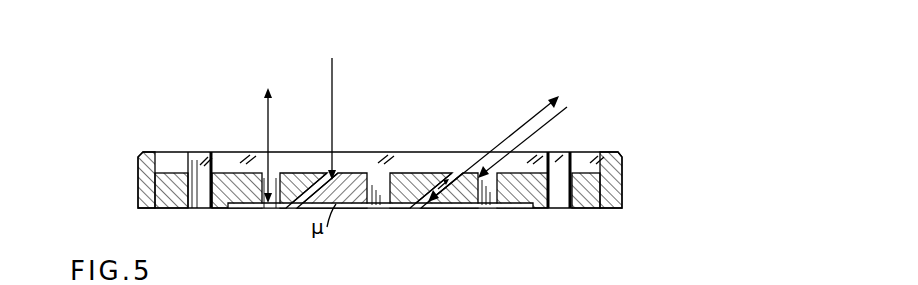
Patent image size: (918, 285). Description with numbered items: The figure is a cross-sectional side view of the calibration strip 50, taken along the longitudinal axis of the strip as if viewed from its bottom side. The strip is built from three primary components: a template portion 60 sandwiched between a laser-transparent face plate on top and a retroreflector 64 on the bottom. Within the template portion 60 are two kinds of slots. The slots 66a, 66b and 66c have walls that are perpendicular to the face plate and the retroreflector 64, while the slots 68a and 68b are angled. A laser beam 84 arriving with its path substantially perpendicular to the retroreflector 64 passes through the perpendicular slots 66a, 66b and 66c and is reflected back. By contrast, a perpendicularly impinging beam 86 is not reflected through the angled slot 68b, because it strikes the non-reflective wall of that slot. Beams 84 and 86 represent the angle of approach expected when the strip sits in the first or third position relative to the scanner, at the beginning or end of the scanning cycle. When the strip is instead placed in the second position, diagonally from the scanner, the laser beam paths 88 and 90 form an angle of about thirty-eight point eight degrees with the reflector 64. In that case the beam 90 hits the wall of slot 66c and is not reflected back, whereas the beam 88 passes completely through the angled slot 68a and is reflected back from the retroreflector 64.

The calibration strip 50 is at (128, 128).
The template portion 60 is at (410, 172).
The retroreflector 64 is at (442, 206).
The slot 66a is at (255, 204).
The slot 66b is at (373, 205).
The slot 66c is at (490, 205).
The slot 68a is at (462, 173).
The slot 68b is at (324, 170).
The laser beam 84 is at (268, 118).
The laser beam 86 is at (332, 96).
The laser beam path 88 is at (520, 128).
The laser beam path 90 is at (544, 128).